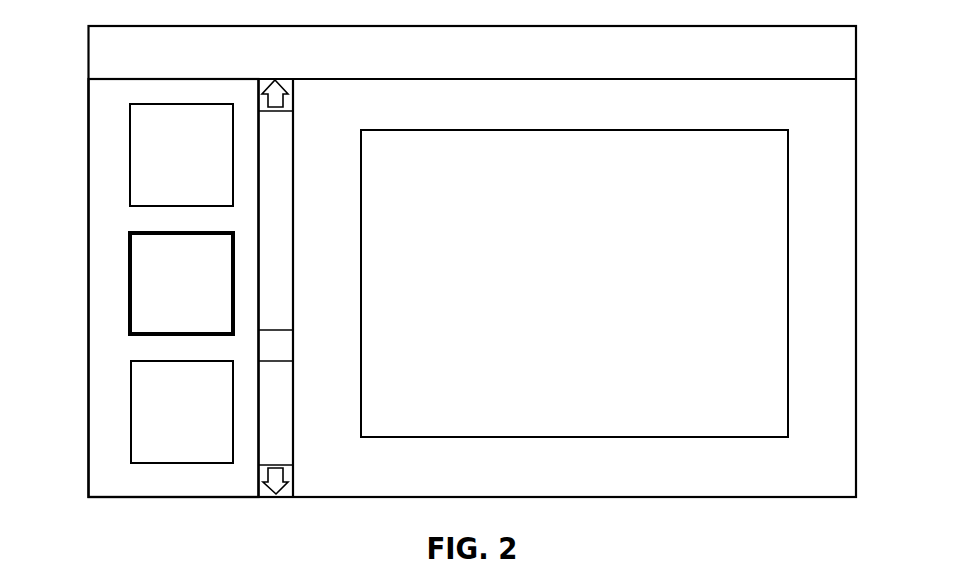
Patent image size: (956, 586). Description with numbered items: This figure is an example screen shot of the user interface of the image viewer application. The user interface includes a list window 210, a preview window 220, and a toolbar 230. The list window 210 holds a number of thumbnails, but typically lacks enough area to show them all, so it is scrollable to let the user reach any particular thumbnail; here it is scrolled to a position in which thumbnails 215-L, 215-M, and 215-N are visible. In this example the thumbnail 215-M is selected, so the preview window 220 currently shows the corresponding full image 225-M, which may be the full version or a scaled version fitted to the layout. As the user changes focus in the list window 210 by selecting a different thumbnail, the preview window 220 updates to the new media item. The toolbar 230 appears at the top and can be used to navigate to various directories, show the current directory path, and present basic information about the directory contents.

The list window 210 is at (109, 218).
The thumbnail 215-L is at (208, 165).
The thumbnail 215-M is at (153, 294).
The thumbnail 215-N is at (154, 422).
The preview window 220 is at (835, 157).
The full image 225-M is at (544, 294).
The toolbar 230 is at (457, 62).